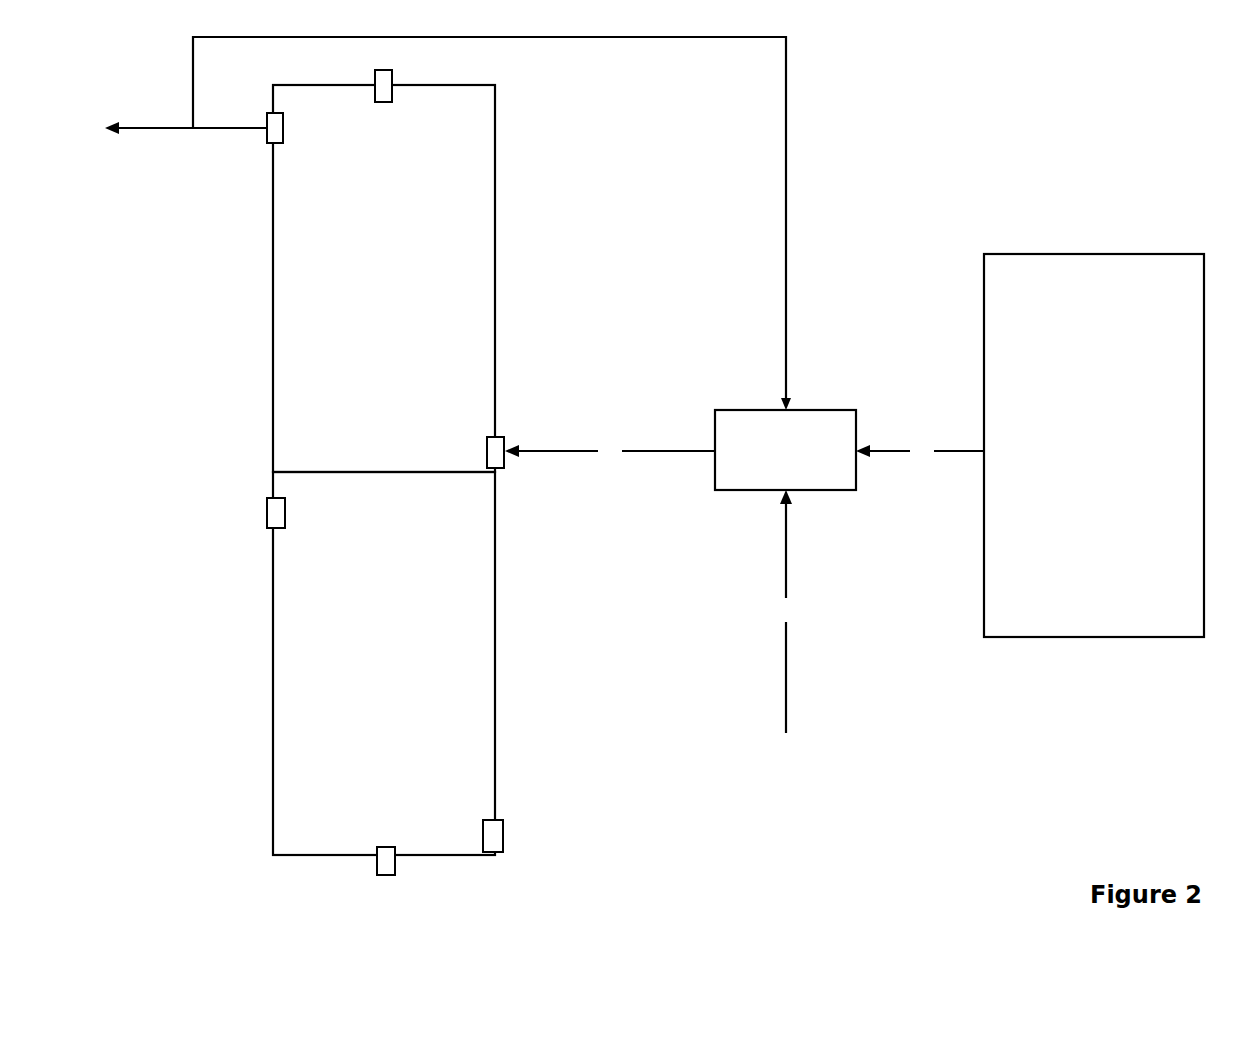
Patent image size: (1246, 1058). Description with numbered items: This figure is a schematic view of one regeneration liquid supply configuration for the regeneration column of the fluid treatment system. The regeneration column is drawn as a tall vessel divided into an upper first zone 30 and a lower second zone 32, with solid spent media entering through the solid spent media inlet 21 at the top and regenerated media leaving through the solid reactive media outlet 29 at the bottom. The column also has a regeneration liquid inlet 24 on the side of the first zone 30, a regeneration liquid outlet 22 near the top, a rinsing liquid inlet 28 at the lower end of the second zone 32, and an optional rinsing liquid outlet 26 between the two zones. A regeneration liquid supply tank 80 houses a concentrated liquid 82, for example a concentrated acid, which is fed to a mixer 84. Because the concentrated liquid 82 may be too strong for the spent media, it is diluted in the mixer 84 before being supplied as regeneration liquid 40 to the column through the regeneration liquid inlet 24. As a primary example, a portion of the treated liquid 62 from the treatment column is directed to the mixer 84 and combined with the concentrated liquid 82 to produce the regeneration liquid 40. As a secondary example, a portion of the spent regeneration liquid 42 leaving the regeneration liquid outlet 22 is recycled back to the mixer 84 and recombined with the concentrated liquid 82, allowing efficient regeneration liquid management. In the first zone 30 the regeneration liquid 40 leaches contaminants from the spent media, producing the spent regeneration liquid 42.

The solid spent media inlet 21 is at (380, 82).
The regeneration liquid outlet 22 is at (272, 133).
The regeneration liquid inlet 24 is at (498, 442).
The rinsing liquid outlet 26 is at (282, 513).
The rinsing liquid inlet 28 is at (488, 833).
The solid reactive media outlet 29 is at (385, 867).
The first zone 30 is at (384, 278).
The second zone 32 is at (384, 663).
The regeneration liquid 40 is at (610, 451).
The spent regeneration liquid 42 is at (448, 217).
The treated liquid 62 is at (788, 611).
The regeneration liquid supply tank 80 is at (1094, 445).
The concentrated liquid 82 is at (920, 451).
The mixer 84 is at (785, 450).